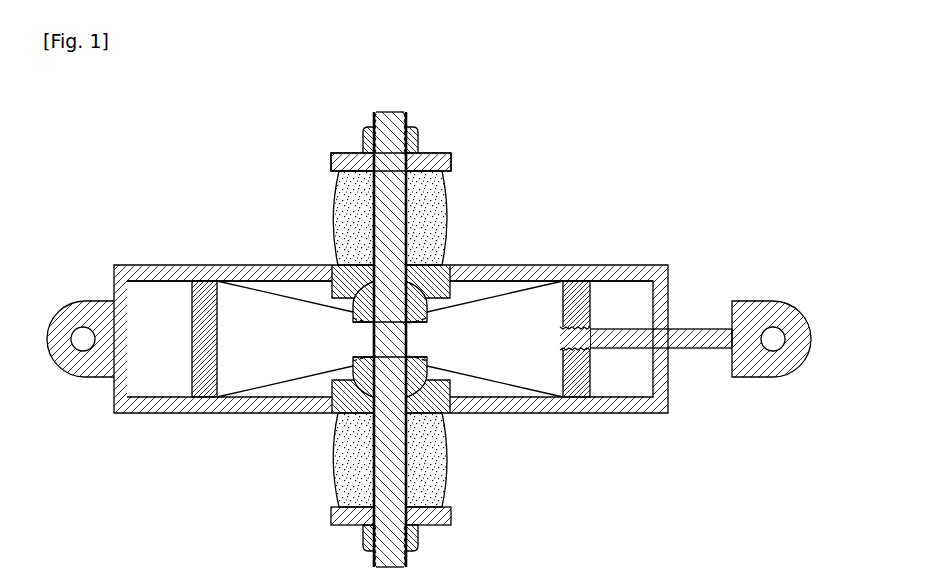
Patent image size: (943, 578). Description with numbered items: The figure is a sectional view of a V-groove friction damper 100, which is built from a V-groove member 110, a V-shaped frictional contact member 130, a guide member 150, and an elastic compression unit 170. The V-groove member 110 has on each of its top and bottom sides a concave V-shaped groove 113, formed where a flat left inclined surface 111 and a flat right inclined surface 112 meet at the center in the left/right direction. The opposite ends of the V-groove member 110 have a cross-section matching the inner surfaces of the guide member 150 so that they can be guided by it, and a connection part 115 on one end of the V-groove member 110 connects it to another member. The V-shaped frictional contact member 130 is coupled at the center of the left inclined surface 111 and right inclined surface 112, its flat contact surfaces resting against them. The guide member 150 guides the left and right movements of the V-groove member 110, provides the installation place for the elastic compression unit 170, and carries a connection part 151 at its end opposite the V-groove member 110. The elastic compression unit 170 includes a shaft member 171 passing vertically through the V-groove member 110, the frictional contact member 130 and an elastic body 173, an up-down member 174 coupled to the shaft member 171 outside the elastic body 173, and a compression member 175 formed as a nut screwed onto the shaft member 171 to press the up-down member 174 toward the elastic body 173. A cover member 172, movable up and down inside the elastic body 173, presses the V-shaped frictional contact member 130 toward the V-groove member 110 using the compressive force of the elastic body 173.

The V-groove friction damper 100 is at (642, 205).
The V-groove member 110 is at (268, 365).
The left inclined surface 111 is at (268, 266).
The right inclined surface 112 is at (505, 265).
The concave V-shaped groove 113 is at (302, 300).
The connection part 115 is at (782, 301).
The V-shaped frictional contact member 130 is at (432, 321).
The guide member 150 is at (157, 413).
The connection part 151 is at (83, 366).
The elastic compression unit 170 is at (453, 158).
The shaft member 171 is at (397, 117).
The cover member 172 is at (335, 280).
The elastic body 173 is at (442, 217).
The up-down member 174 is at (333, 162).
The compression member 175 is at (362, 144).